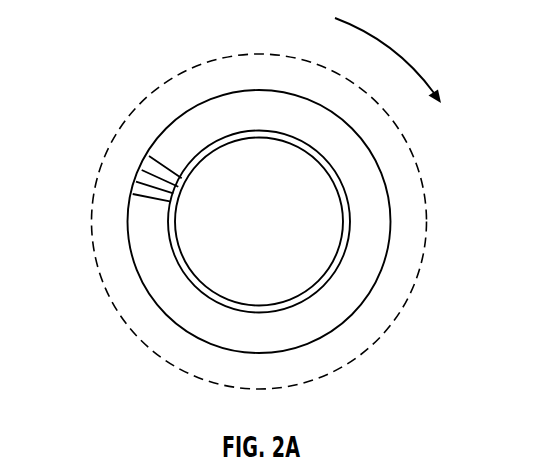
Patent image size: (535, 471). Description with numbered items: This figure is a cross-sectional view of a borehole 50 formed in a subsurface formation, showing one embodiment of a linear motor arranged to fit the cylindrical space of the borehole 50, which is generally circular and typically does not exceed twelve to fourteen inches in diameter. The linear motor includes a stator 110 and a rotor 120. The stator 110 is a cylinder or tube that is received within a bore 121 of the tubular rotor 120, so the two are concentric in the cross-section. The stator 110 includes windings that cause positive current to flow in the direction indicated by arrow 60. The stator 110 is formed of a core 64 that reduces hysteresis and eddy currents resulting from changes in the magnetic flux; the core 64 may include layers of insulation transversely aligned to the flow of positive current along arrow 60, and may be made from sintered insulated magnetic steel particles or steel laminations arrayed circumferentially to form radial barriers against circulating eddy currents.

The borehole 50 is at (160, 355).
The arrow 60 is at (395, 50).
The core 64 is at (152, 193).
The stator 110 is at (277, 232).
The rotor 120 is at (193, 130).
The bore 121 is at (263, 131).